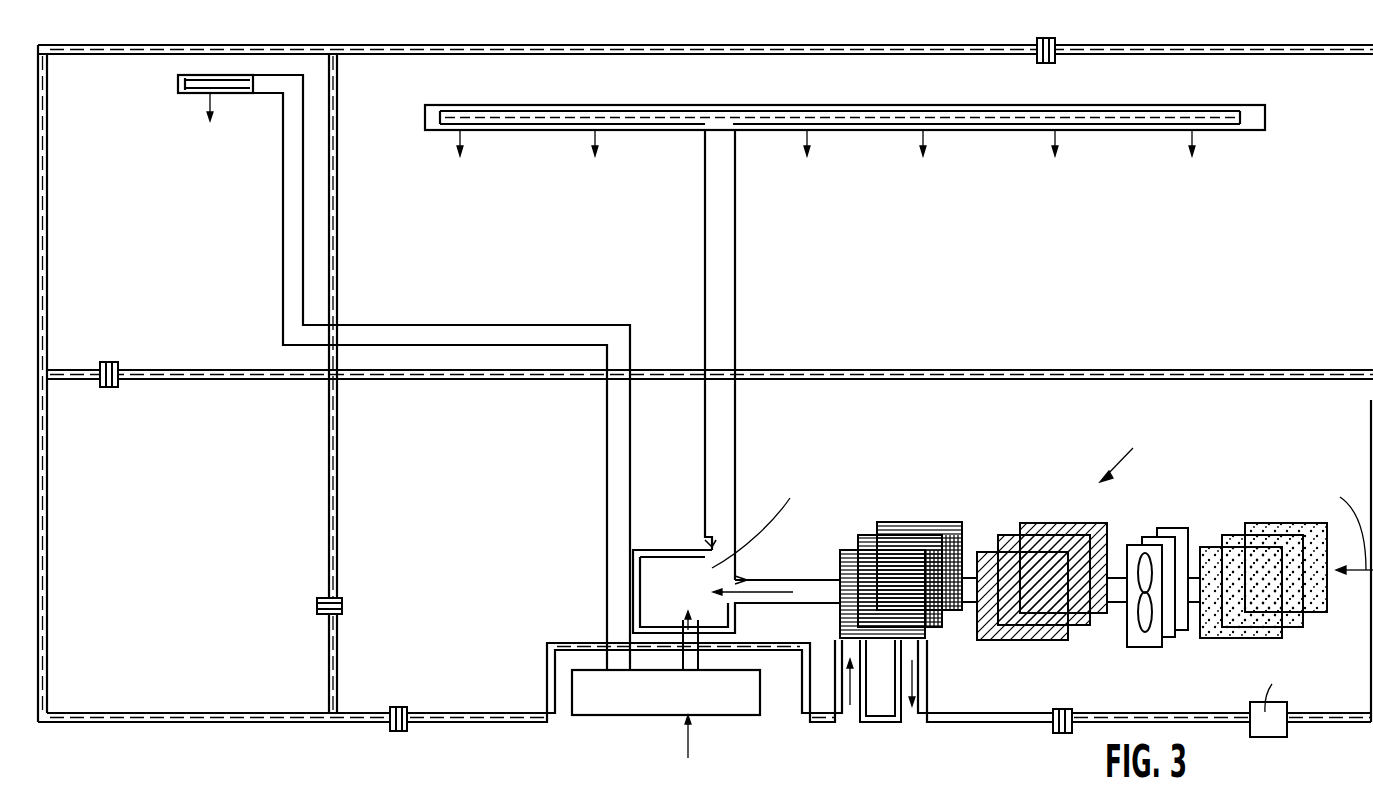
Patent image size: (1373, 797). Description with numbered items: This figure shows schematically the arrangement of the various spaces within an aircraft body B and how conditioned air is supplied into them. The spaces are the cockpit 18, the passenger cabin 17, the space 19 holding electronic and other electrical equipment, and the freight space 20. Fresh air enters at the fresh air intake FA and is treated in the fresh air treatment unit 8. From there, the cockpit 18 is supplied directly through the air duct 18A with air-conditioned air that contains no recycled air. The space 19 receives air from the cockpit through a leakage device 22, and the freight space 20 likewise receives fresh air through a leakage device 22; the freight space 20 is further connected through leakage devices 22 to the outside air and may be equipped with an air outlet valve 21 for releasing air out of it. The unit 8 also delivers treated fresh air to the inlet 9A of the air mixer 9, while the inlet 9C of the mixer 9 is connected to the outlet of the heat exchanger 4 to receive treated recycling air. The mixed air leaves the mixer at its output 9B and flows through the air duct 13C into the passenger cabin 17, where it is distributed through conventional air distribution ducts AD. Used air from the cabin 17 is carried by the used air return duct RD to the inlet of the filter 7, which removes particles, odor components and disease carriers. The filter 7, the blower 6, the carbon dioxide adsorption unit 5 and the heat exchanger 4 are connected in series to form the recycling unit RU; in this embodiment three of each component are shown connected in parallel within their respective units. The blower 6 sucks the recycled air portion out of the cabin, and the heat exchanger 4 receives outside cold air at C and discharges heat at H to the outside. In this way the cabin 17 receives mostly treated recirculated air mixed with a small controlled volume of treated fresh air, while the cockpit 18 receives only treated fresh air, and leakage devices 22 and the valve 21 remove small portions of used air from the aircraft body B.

The aircraft body B is at (1249, 46).
The cockpit 18 is at (178, 203).
The passenger cabin 17 is at (500, 203).
The electronic and electrical equipment space 19 is at (163, 557).
The freight space 20 is at (437, 557).
The air duct 18A is at (609, 488).
The air distribution ducts AD is at (1097, 132).
The air duct 13C is at (727, 300).
The air mixer 9 is at (722, 617).
The mixer inlet for fresh air 9A is at (701, 622).
The mixer output 9B is at (711, 537).
The mixer inlet for recycled air 9C is at (744, 577).
The fresh air treatment unit 8 is at (648, 702).
The fresh air intake FA is at (690, 742).
The heat exchanger 4 is at (917, 521).
The carbon dioxide adsorption unit 5 is at (1060, 530).
The blower 6 is at (1158, 528).
The filter 7 is at (1277, 523).
The recycling unit RU is at (1126, 451).
The used air return duct RD is at (1347, 522).
The cold air inlet of heat exchanger C is at (853, 655).
The heat discharge of heat exchanger H is at (917, 677).
The leakage device 22 is at (1057, 57).
The air outlet valve 21 is at (1265, 737).